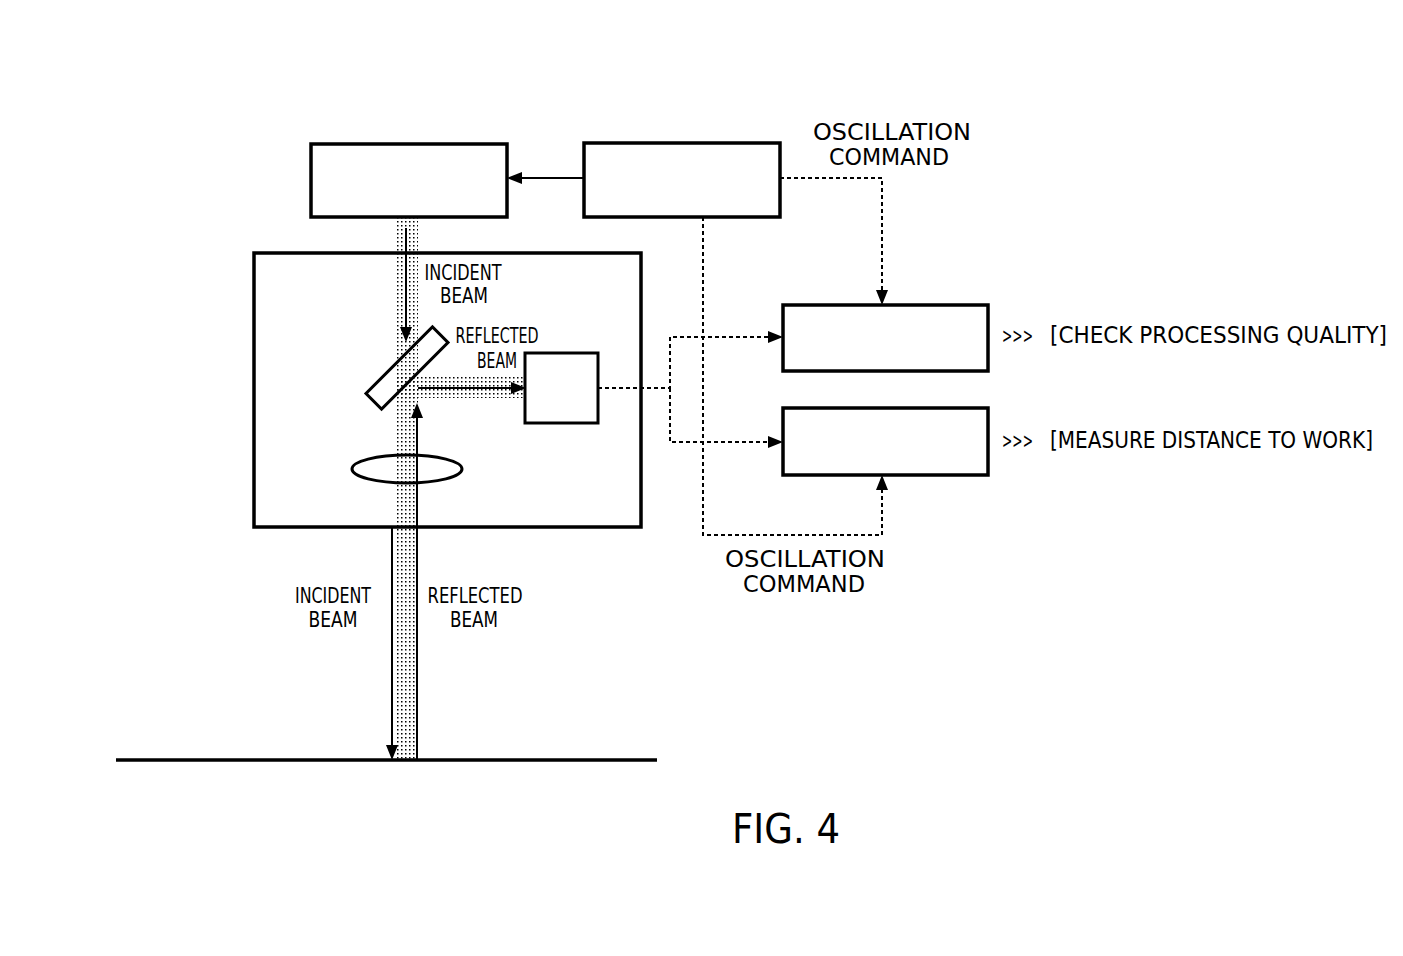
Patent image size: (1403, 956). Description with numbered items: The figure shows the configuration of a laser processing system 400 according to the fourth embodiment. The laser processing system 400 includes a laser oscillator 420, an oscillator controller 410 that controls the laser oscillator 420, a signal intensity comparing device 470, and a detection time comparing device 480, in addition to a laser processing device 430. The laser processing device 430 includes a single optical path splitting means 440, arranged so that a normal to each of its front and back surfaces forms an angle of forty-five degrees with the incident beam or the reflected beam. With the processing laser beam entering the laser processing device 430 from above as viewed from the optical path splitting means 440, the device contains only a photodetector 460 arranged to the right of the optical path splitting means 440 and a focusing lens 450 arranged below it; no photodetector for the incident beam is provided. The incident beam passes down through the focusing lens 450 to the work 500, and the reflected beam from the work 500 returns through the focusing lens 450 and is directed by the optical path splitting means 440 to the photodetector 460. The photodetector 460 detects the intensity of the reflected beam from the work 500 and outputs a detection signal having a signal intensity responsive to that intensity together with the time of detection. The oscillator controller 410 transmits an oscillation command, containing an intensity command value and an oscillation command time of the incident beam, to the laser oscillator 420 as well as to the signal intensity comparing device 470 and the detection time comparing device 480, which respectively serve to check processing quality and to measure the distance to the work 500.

The laser processing system 400 is at (1070, 92).
The oscillator controller 410 is at (683, 143).
The laser oscillator 420 is at (417, 144).
The laser processing device 430 is at (257, 252).
The optical path splitting means 440 is at (383, 380).
The focusing lens 450 is at (463, 469).
The photodetector 460 is at (568, 352).
The signal intensity comparing device 470 is at (916, 305).
The detection time comparing device 480 is at (915, 476).
The work 500 is at (632, 760).